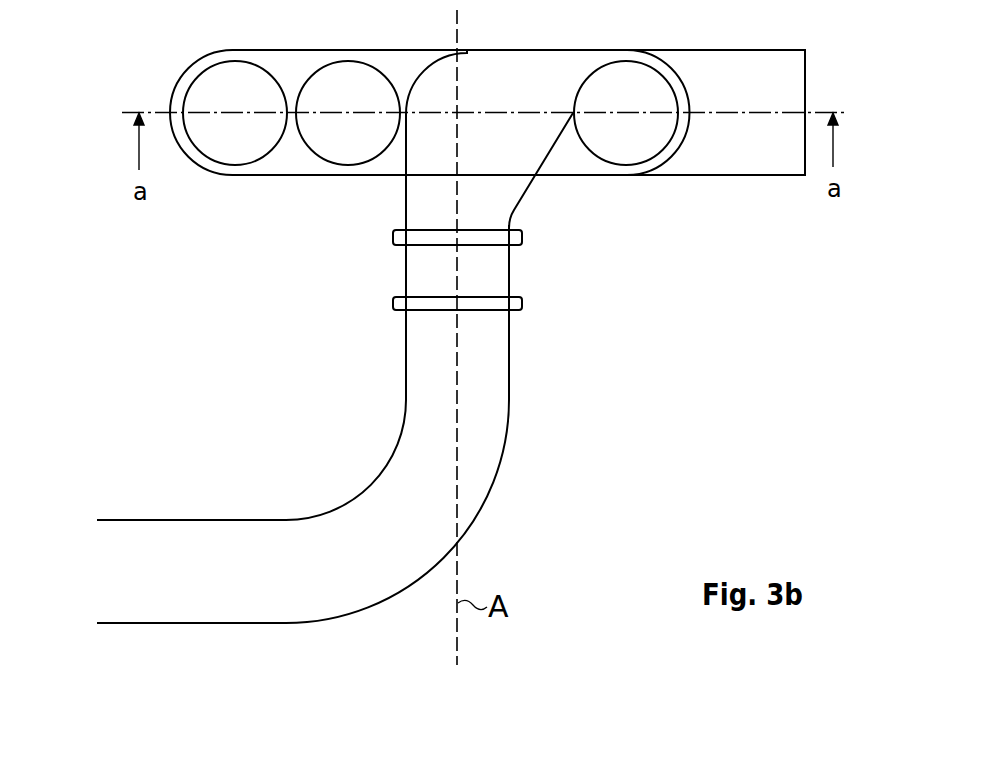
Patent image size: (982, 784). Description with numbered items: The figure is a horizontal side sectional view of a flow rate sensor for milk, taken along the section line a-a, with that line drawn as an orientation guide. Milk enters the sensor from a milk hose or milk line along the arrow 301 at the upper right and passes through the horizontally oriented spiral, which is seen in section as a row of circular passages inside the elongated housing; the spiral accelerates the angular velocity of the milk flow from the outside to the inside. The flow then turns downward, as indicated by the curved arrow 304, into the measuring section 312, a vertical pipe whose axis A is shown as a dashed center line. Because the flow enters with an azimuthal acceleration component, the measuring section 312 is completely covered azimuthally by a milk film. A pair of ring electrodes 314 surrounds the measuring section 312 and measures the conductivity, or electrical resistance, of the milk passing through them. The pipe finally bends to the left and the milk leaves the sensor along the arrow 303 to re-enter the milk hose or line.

The arrow 301 is at (908, 85).
The arrow 303 is at (183, 582).
The flow passage into connecting pipe 304 is at (484, 115).
The measuring section 312 is at (377, 273).
The ring electrodes 314 is at (523, 304).